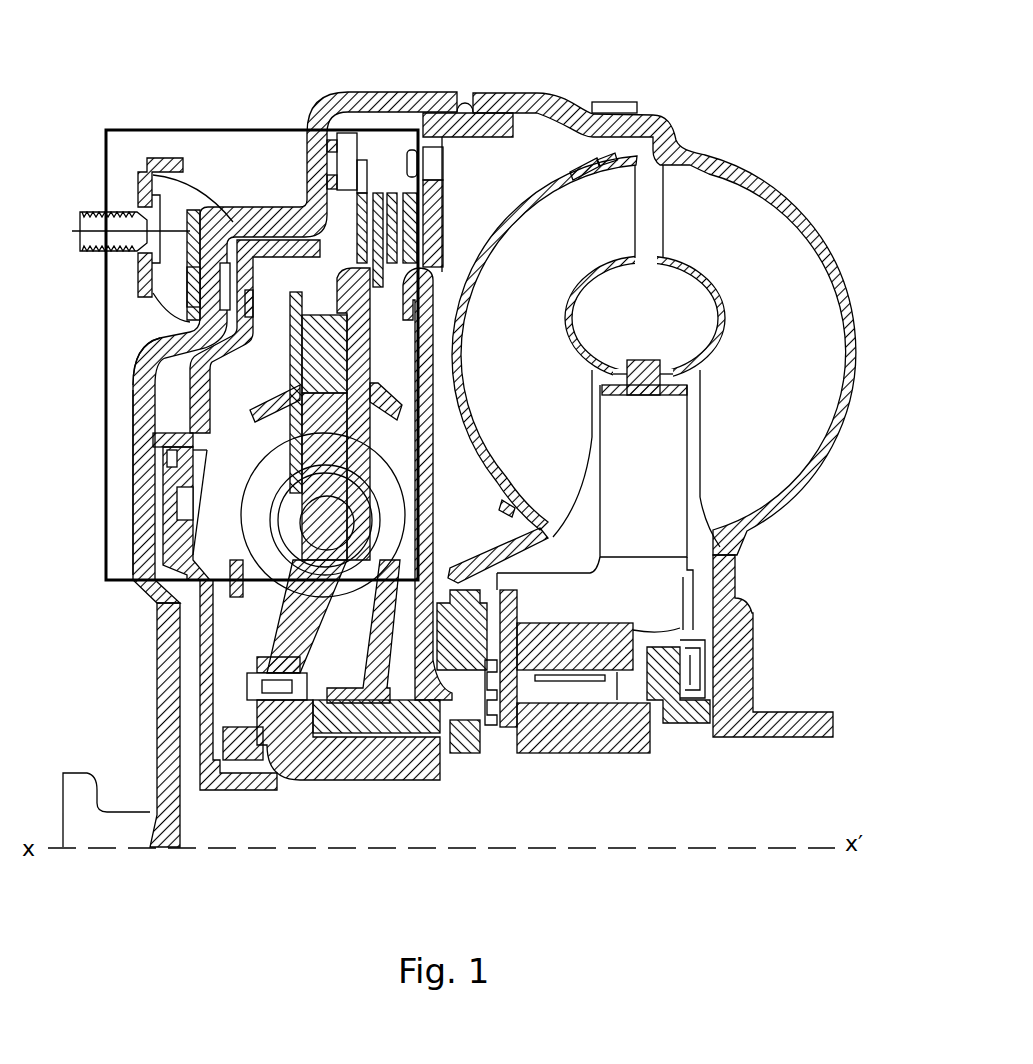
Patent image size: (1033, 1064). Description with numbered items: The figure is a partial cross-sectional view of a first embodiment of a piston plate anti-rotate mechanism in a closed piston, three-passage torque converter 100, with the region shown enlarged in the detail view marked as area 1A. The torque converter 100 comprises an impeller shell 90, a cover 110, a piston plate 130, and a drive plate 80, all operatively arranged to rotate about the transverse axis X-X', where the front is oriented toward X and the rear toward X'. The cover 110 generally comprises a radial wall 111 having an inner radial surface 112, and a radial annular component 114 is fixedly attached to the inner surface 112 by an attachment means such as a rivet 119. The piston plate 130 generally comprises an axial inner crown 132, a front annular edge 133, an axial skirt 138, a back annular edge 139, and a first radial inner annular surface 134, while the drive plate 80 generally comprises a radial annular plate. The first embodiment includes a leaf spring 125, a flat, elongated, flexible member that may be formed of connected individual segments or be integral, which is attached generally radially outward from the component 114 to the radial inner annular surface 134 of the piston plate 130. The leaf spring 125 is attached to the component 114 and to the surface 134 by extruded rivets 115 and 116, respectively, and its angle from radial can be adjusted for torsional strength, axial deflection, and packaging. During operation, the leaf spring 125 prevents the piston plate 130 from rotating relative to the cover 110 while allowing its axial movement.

The area 1A is at (262, 118).
The closed piston torque converter 100 is at (792, 78).
The cover 110 is at (425, 92).
The impeller shell 90 is at (512, 95).
The drive plate 80 is at (395, 222).
The piston plate 130 is at (143, 165).
The axial skirt 138 is at (302, 212).
The back annular edge 139 is at (370, 235).
The inner radial surface 112 is at (140, 357).
The radial wall 111 is at (135, 388).
The extruded rivet 116 is at (160, 430).
The front annular edge 133 is at (160, 452).
The leaf spring 125 is at (170, 510).
The extruded rivet 115 is at (157, 568).
The radial annular component 114 is at (160, 605).
The rivet 119 is at (195, 712).
The first radial inner annular surface 134 is at (210, 387).
The axial inner crown 132 is at (207, 447).